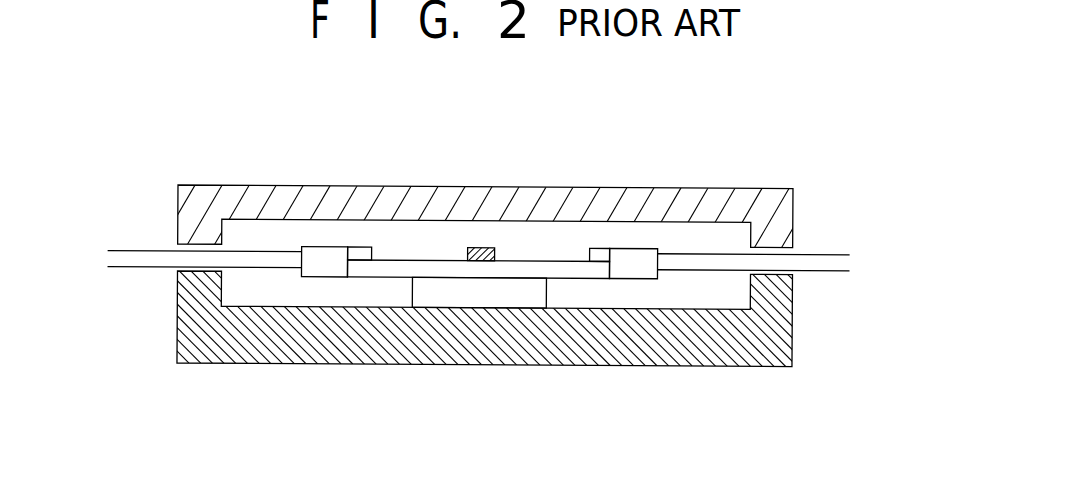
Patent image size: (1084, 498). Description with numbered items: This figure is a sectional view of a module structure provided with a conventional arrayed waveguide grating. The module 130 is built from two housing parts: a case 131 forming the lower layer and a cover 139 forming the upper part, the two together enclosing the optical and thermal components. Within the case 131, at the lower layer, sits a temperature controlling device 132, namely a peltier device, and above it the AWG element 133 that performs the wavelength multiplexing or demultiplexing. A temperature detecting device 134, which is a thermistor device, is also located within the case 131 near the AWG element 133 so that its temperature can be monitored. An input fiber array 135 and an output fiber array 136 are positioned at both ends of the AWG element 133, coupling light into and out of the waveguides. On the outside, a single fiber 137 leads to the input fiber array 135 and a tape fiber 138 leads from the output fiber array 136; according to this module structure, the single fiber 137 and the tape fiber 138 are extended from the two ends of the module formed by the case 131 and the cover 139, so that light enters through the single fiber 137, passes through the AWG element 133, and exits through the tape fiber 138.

The module 130 is at (541, 477).
The case 131 is at (692, 366).
The temperature controlling device 132 is at (472, 300).
The AWG element 133 is at (537, 259).
The temperature detecting device 134 is at (483, 246).
The input fiber array 135 is at (322, 246).
The output fiber array 136 is at (640, 246).
The single fiber 137 is at (136, 251).
The tape fiber 138 is at (827, 255).
The cover 139 is at (408, 187).